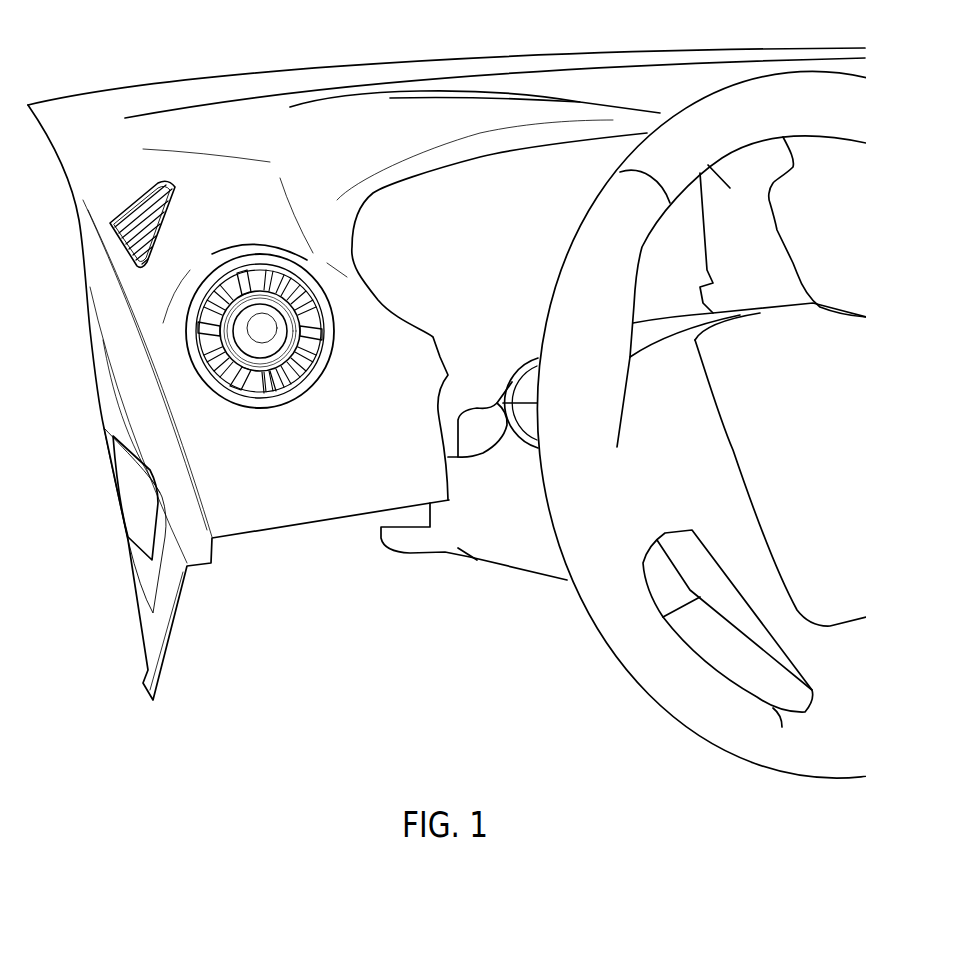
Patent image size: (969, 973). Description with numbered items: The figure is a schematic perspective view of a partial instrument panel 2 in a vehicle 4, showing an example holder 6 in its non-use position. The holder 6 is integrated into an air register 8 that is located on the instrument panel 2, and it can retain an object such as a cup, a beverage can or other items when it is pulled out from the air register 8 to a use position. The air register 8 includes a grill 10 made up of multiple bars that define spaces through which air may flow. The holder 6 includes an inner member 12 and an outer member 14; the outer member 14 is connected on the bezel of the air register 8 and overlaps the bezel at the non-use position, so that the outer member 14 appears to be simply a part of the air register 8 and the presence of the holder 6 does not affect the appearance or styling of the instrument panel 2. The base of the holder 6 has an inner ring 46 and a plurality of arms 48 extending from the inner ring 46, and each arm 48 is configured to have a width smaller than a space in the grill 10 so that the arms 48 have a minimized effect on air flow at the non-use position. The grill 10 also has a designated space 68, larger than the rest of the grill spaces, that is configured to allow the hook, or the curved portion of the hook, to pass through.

The instrument panel 2 is at (115, 177).
The vehicle 4 is at (887, 73).
The holder 6 is at (200, 383).
The air register 8 is at (267, 334).
The grill 10 is at (250, 268).
The inner member 12 is at (212, 312).
The outer member 14 is at (328, 361).
The inner ring 46 is at (280, 298).
The arms 48 is at (318, 329).
The designated space 68 is at (268, 398).